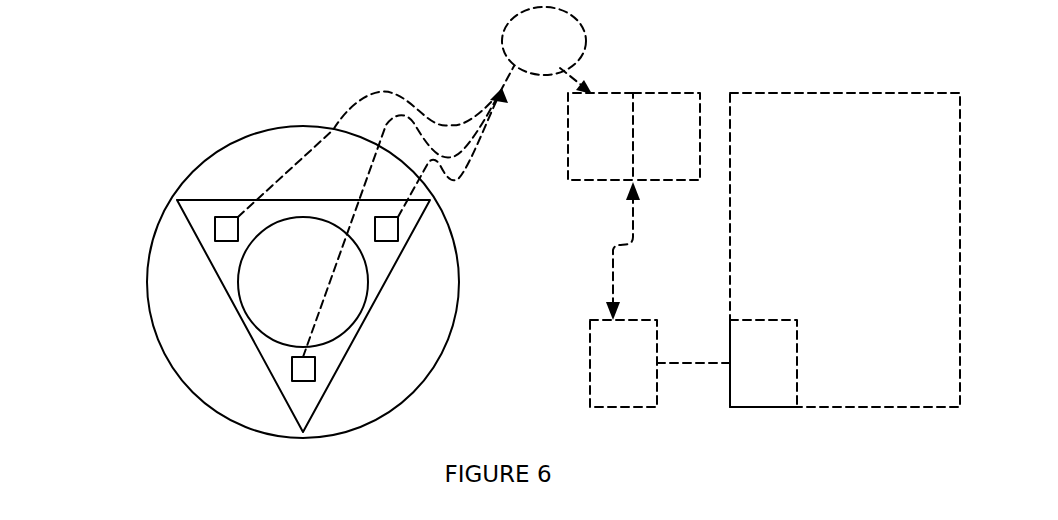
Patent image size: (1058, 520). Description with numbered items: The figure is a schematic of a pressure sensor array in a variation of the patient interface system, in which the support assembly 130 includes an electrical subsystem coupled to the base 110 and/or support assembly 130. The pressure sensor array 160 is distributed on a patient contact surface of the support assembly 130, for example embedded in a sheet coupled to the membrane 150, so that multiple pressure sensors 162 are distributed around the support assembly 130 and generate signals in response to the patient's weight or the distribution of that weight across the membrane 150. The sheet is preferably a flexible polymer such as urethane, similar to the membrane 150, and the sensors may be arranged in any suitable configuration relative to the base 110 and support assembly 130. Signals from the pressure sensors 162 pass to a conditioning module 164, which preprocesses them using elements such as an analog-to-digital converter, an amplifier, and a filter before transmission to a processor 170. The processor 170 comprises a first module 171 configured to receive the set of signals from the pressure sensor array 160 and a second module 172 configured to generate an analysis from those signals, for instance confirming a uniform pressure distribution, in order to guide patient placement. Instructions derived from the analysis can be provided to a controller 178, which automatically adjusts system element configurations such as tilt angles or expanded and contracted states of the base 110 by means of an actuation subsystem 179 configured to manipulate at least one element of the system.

The base 110 is at (845, 250).
The support assembly 130 is at (845, 250).
The membrane 150 is at (420, 338).
The pressure sensor array 160 is at (222, 287).
The pressure sensors 162 is at (225, 233).
The conditioning module 164 is at (415, 182).
The processor 170 is at (634, 124).
The first module 171 is at (600, 136).
The second module 172 is at (666, 136).
The controller 178 is at (623, 363).
The actuation subsystem 179 is at (763, 363).